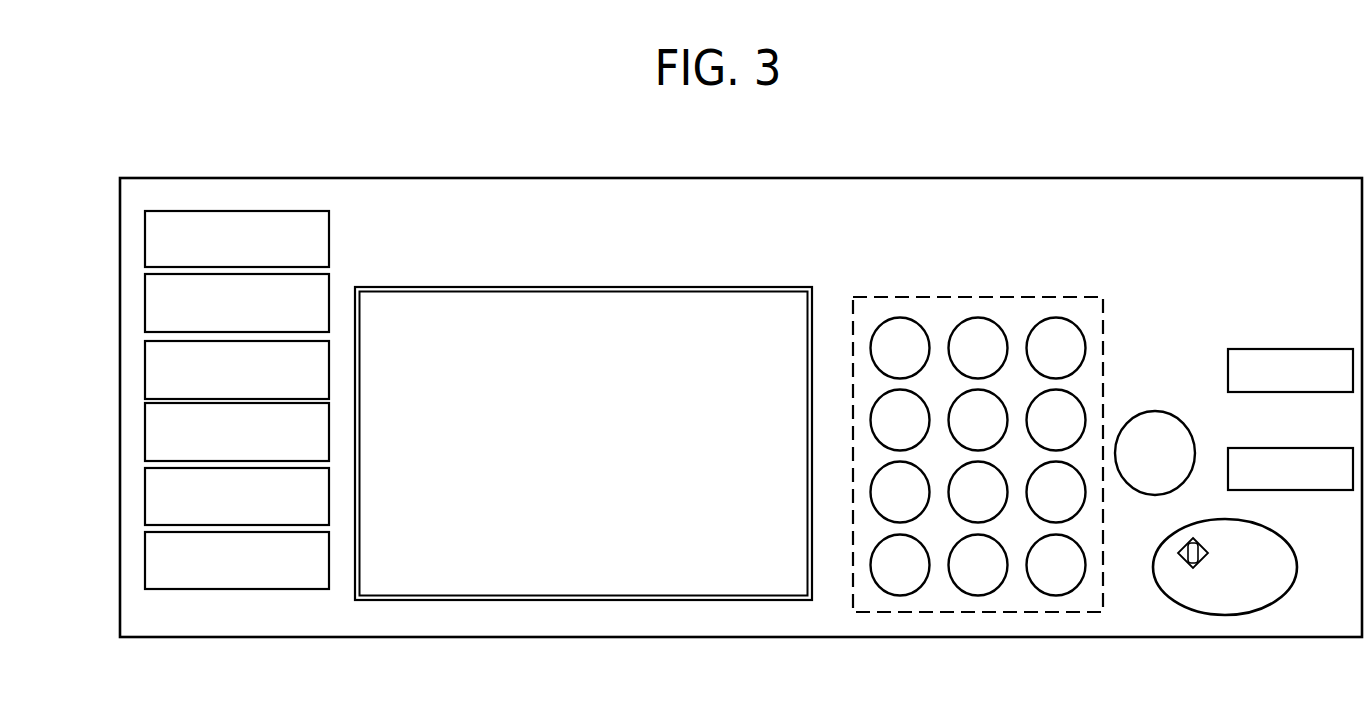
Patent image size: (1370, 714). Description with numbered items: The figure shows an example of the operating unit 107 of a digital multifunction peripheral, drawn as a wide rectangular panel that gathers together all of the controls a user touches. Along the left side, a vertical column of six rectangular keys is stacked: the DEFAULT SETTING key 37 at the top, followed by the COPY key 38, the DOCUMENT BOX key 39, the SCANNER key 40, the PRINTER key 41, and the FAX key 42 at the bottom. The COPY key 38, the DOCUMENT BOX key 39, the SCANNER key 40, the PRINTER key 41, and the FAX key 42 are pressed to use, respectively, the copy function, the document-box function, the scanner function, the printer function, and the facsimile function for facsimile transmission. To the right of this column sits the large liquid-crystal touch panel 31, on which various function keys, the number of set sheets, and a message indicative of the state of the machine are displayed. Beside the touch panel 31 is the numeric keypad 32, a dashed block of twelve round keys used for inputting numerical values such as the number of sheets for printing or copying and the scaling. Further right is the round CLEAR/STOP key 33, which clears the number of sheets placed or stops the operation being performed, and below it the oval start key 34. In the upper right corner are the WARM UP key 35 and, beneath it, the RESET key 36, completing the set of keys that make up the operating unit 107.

The operating unit 107 is at (1212, 180).
The liquid-crystal touch panel 31 is at (666, 287).
The numeric keypad 32 is at (985, 287).
The CLEAR/STOP key 33 is at (1152, 412).
The start key 34 is at (1297, 567).
The WARM UP key 35 is at (1312, 349).
The RESET key 36 is at (1312, 448).
The DEFAULT SETTING key 37 is at (145, 240).
The COPY key 38 is at (145, 301).
The DOCUMENT BOX key 39 is at (145, 366).
The SCANNER key 40 is at (145, 430).
The PRINTER key 41 is at (145, 495).
The FAX key 42 is at (145, 558).